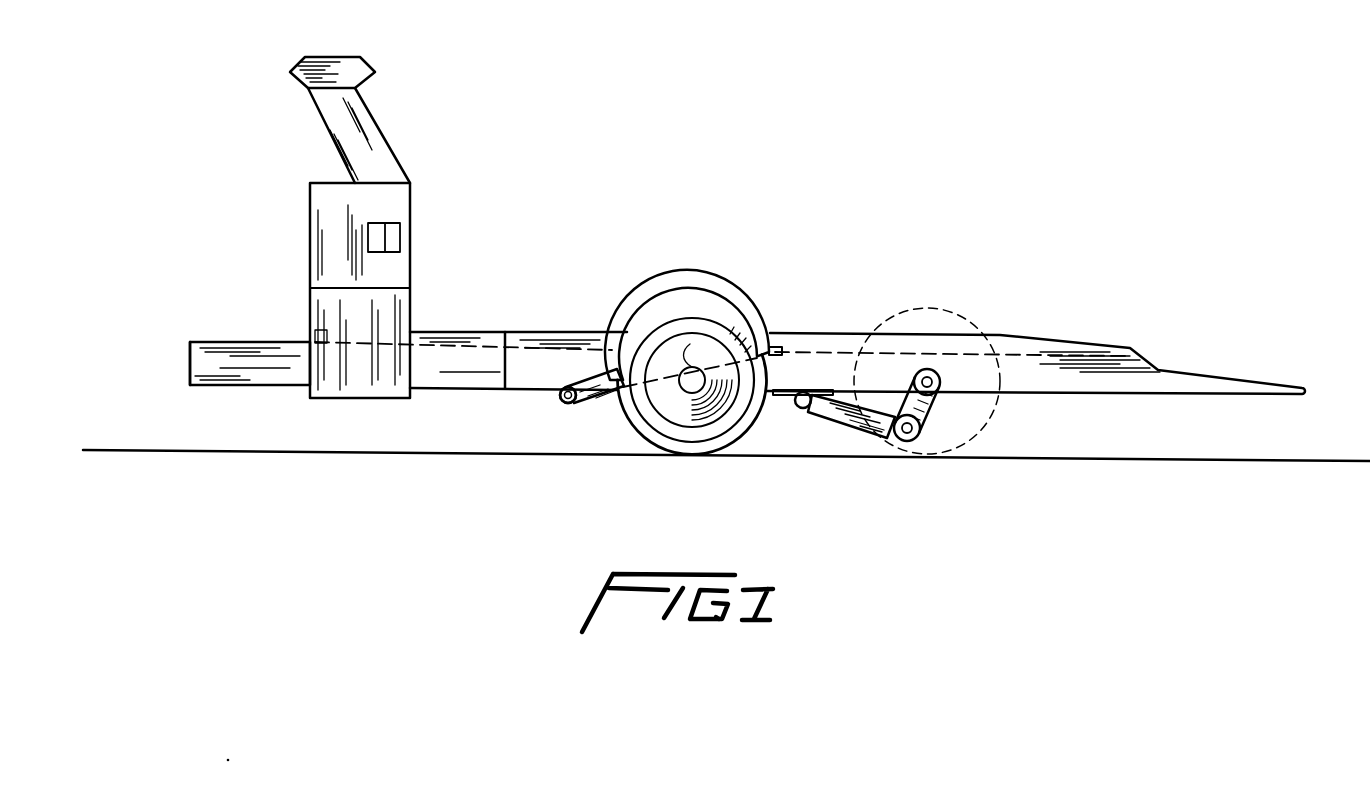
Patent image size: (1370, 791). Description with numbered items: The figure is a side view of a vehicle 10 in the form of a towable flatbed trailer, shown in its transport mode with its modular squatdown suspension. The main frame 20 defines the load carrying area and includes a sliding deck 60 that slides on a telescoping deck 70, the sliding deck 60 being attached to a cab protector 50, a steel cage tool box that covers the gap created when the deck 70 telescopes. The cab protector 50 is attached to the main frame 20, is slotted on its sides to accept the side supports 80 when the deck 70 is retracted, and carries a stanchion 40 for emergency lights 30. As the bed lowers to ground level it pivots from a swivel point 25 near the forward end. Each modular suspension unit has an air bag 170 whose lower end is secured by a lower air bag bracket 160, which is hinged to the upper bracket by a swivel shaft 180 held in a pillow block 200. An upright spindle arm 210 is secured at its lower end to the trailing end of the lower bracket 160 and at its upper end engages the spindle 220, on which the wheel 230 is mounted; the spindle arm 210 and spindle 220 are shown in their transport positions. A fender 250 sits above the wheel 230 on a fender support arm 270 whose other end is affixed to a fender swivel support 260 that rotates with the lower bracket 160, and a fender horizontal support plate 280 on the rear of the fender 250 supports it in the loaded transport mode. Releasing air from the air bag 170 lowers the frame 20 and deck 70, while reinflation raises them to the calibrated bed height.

The vehicle 10 is at (663, 217).
The main frame 20 is at (238, 340).
The swivel point 25 is at (190, 363).
The emergency lights 30 is at (366, 63).
The stanchion 40 is at (387, 137).
The cab protector 50 is at (423, 197).
The sliding deck 60 is at (415, 342).
The telescoping deck 70 is at (468, 342).
The side support 80 is at (550, 332).
The lower air bag bracket 160 is at (852, 420).
The air bag 170 is at (899, 372).
The swivel shaft 180 is at (563, 404).
The pillow block 200 is at (798, 412).
The spindle arm 210 is at (948, 387).
The spindle 220 is at (940, 375).
The wheel 230 is at (727, 427).
The fender 250 is at (685, 300).
The fender swivel support 260 is at (567, 406).
The fender support arm 270 is at (598, 392).
The fender horizontal support plate 280 is at (778, 347).